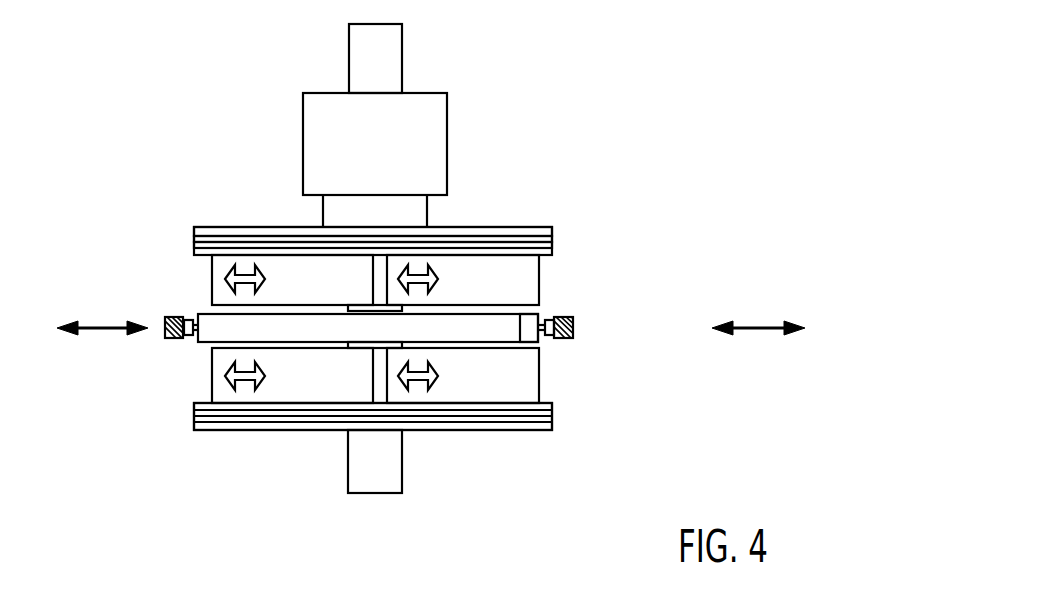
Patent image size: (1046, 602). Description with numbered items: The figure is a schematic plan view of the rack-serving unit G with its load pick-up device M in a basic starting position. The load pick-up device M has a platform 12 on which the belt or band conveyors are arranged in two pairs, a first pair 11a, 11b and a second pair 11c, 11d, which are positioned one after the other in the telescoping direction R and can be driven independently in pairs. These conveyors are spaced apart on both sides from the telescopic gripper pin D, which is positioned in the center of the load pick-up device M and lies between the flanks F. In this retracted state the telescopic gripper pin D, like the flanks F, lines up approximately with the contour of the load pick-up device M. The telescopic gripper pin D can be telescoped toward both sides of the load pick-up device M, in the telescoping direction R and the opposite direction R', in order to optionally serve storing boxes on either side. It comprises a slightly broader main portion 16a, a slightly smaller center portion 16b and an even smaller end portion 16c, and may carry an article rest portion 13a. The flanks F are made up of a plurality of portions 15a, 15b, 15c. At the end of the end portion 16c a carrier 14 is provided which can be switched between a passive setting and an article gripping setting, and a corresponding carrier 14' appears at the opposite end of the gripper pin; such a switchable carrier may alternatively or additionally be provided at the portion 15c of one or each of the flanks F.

The rack-serving unit G is at (453, 132).
The flanks F is at (404, 338).
The load pick-up device M is at (471, 440).
The belt or band conveyor 11a is at (490, 268).
The belt or band conveyor 11b is at (520, 385).
The belt or band conveyor 11c is at (238, 258).
The belt or band conveyor 11d is at (278, 392).
The platform 12 is at (404, 467).
The article rest portion 13a is at (507, 323).
The carrier 14 is at (602, 326).
The fastening nut 14' is at (164, 350).
The flank portion 15a is at (553, 229).
The flank portion 15b is at (553, 242).
The flank portion 15c is at (553, 250).
The main portion 16a is at (545, 343).
The center portion 16b is at (550, 337).
The end portion 16c is at (552, 318).
The telescopic gripper pin D is at (213, 318).
The telescoping direction R is at (758, 301).
The direction of movement R' is at (102, 301).